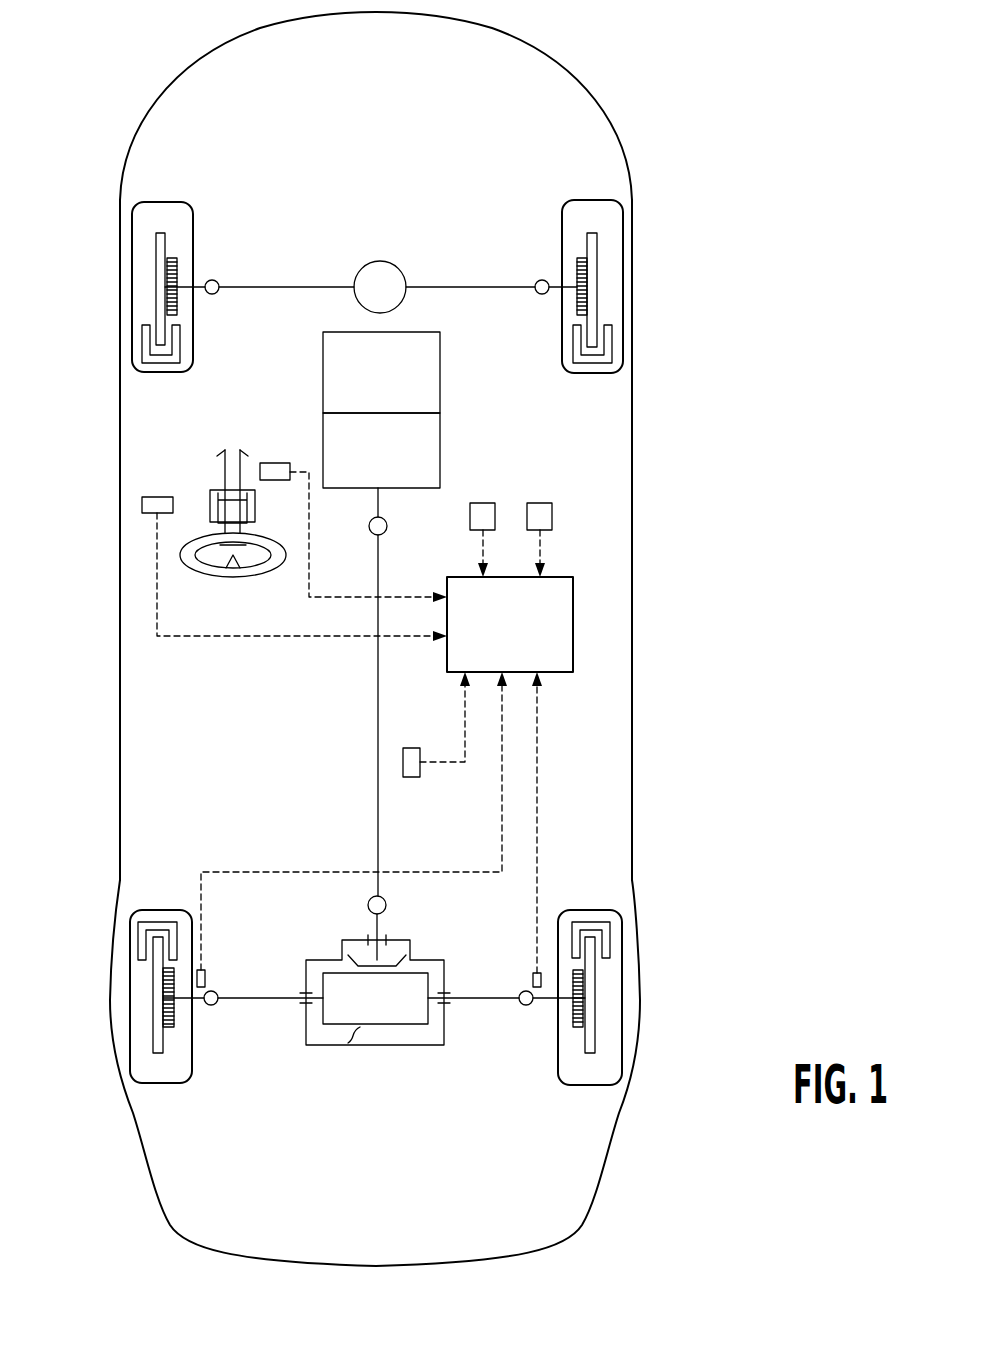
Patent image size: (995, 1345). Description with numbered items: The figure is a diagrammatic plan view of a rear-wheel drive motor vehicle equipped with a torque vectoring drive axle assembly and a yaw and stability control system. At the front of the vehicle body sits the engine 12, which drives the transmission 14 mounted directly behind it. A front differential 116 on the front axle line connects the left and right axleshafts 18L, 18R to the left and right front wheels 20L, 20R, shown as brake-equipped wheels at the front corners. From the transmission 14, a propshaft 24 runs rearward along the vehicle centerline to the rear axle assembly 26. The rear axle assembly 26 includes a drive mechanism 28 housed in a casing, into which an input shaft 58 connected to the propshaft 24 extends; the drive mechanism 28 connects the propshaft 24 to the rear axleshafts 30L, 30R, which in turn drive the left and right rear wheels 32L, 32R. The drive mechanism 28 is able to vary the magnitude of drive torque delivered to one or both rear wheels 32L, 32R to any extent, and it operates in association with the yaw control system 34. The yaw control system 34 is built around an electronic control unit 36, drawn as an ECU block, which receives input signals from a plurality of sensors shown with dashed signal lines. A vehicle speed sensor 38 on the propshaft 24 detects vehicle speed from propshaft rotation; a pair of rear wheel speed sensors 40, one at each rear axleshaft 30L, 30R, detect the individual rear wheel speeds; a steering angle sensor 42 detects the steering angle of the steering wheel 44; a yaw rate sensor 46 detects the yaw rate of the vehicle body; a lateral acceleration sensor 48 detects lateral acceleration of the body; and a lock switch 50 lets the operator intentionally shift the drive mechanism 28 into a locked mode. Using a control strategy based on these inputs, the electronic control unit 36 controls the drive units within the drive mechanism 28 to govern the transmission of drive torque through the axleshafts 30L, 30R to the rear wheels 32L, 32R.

The engine 12 is at (427, 355).
The transmission 14 is at (403, 473).
The front differential 116 is at (374, 266).
The axleshaft 18L is at (273, 289).
The axleshaft 18R is at (522, 289).
The left front wheel 20L is at (137, 200).
The right front wheel 20R is at (618, 198).
The propshaft 24 is at (377, 690).
The rear axle assembly 26 is at (400, 1054).
The drive mechanism 28 is at (388, 1012).
The axleshaft 30L is at (265, 1001).
The axleshaft 30R is at (487, 1001).
The left rear wheel 32L is at (128, 912).
The right rear wheel 32R is at (620, 912).
The yaw control system 34 is at (600, 654).
The electronic control unit 36 is at (562, 632).
The vehicle speed sensor 38 is at (403, 762).
The rear wheel speed sensor 40 is at (206, 975).
The steering angle sensor 42 is at (278, 463).
The steering wheel 44 is at (207, 575).
The yaw rate sensor 46 is at (484, 503).
The lateral acceleration sensor 48 is at (542, 503).
The lock switch 50 is at (158, 497).
The input shaft 58 is at (378, 925).